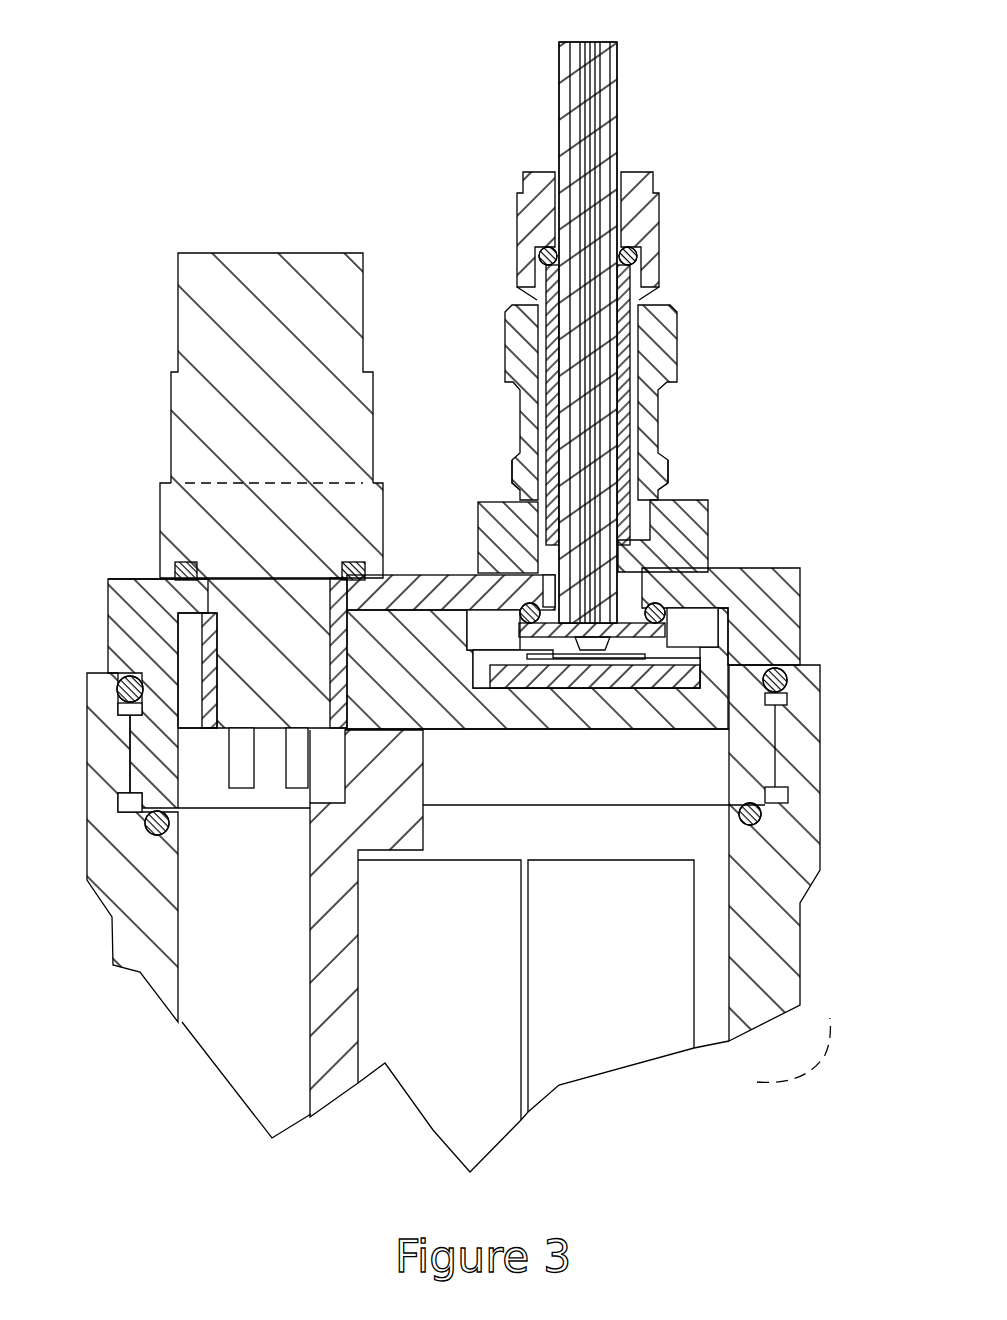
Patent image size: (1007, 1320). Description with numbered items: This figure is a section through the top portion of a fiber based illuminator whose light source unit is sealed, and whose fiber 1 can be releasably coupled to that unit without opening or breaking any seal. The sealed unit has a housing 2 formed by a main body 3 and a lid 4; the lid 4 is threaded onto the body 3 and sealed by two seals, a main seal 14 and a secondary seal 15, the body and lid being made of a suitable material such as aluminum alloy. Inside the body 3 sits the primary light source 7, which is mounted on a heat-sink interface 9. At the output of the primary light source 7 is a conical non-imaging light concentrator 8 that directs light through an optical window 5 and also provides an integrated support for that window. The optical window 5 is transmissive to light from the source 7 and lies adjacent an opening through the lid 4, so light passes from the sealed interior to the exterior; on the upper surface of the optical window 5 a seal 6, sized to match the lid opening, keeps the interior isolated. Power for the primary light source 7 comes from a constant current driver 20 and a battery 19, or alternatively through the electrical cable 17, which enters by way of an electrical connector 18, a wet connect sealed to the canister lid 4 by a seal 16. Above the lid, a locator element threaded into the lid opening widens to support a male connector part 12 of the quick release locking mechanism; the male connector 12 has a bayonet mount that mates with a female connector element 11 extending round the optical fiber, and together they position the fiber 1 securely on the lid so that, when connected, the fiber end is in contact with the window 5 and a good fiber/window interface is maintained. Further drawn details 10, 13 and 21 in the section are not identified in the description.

The fiber 1 is at (581, 42).
The housing 2 is at (815, 1075).
The main body 3 is at (138, 948).
The lid 4 is at (128, 625).
The optical window 5 is at (728, 626).
The seal 6 is at (527, 604).
The primary light source 7 is at (628, 720).
The conical non-imaging light concentrator 8 is at (487, 632).
The heat-sink interface 9 is at (516, 720).
The crimp sleeve 10 is at (630, 292).
The female connector element 11 is at (650, 342).
The male connector part 12 is at (660, 482).
The support block 13 is at (700, 540).
The main seal 14 is at (145, 823).
The secondary seal 15 is at (118, 694).
The seal 16 is at (176, 570).
The electrical cable 17 is at (205, 297).
The electrical connector 18 is at (225, 497).
The battery 19 is at (568, 1045).
The constant current driver 20 is at (257, 1046).
The O-ring 21 is at (640, 248).